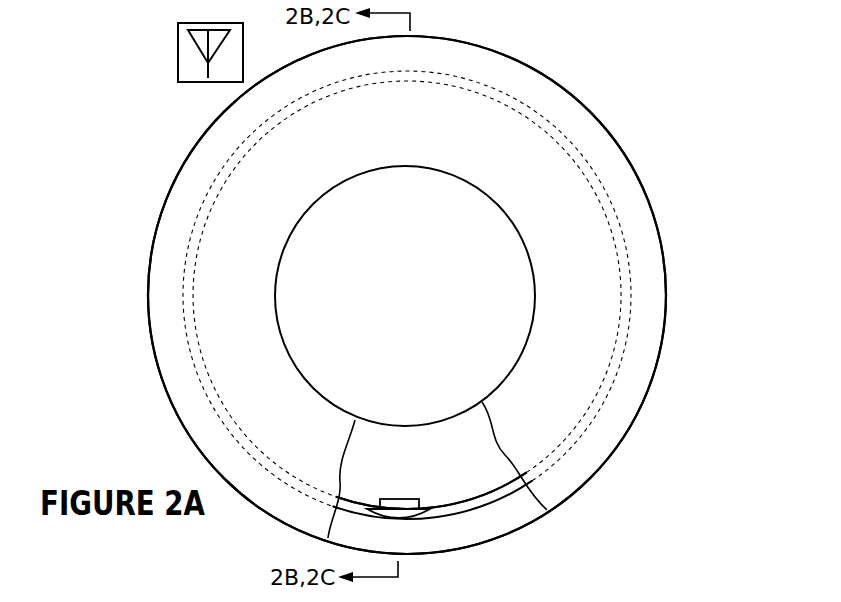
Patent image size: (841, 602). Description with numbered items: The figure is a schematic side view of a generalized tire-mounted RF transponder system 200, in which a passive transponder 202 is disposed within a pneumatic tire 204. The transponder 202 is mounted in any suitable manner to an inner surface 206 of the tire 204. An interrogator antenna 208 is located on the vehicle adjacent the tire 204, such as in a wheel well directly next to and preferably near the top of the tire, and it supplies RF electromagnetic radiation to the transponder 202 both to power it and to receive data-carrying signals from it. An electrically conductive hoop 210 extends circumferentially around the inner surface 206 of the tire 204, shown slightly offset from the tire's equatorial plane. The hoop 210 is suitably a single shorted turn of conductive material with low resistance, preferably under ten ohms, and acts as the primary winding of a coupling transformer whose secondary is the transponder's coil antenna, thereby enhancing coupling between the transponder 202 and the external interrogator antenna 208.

The tire-mounted RF transponder system 200 is at (592, 58).
The passive transponder 202 is at (404, 498).
The pneumatic tire 204 is at (620, 122).
The inner surface of the tire 206 is at (498, 500).
The interrogator antenna 208 is at (178, 45).
The electrically conductive hoop 210 is at (468, 497).